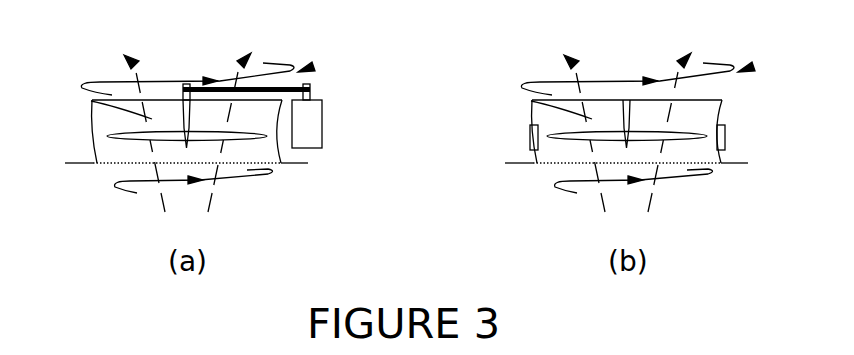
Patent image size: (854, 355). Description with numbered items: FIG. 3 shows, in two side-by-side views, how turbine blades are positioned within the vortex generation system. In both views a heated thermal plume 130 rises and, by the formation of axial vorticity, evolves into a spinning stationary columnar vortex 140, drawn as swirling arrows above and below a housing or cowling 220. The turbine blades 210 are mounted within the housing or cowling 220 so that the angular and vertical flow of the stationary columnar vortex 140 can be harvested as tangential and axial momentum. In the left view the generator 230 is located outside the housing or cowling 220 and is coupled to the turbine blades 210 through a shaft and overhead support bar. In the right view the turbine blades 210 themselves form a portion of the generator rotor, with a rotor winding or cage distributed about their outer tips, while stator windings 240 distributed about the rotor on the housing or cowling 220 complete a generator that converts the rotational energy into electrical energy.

The thermal plume 130 is at (98, 113).
The stationary columnar vortex 140 is at (314, 66).
The turbine blades 210 is at (123, 141).
The housing or cowling 220 is at (93, 158).
The generator 230 is at (312, 140).
The stator windings 240 is at (725, 135).